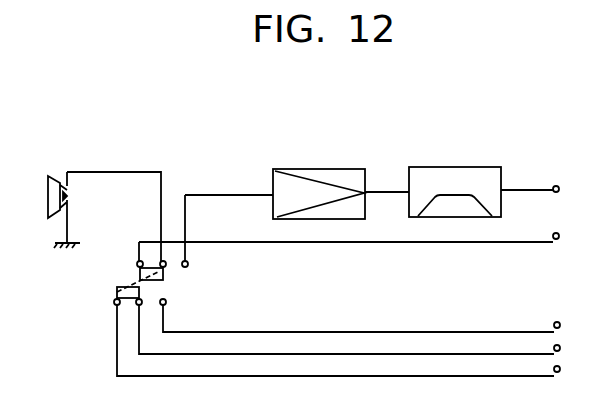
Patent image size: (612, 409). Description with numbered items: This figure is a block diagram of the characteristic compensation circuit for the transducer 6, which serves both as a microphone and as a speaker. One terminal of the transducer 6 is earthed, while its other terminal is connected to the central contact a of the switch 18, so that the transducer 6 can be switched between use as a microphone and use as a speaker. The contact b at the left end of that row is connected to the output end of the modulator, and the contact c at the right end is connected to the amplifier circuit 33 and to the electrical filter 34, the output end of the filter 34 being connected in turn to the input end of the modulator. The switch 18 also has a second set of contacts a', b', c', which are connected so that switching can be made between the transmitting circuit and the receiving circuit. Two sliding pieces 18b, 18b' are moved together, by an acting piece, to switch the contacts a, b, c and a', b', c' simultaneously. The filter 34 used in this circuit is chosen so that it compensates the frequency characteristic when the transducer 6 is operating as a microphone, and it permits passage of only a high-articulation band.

The transducer 6 is at (50, 176).
The amplifier circuit 33 is at (310, 169).
The electrical filter 34 is at (453, 167).
The switch 18 is at (172, 288).
The sliding piece 18b is at (110, 274).
The sliding piece 18b' is at (97, 300).
The central contact a is at (152, 232).
The contact b is at (123, 252).
The contact c is at (206, 259).
The contact a' is at (121, 330).
The contact b' is at (97, 321).
The contact c' is at (181, 307).